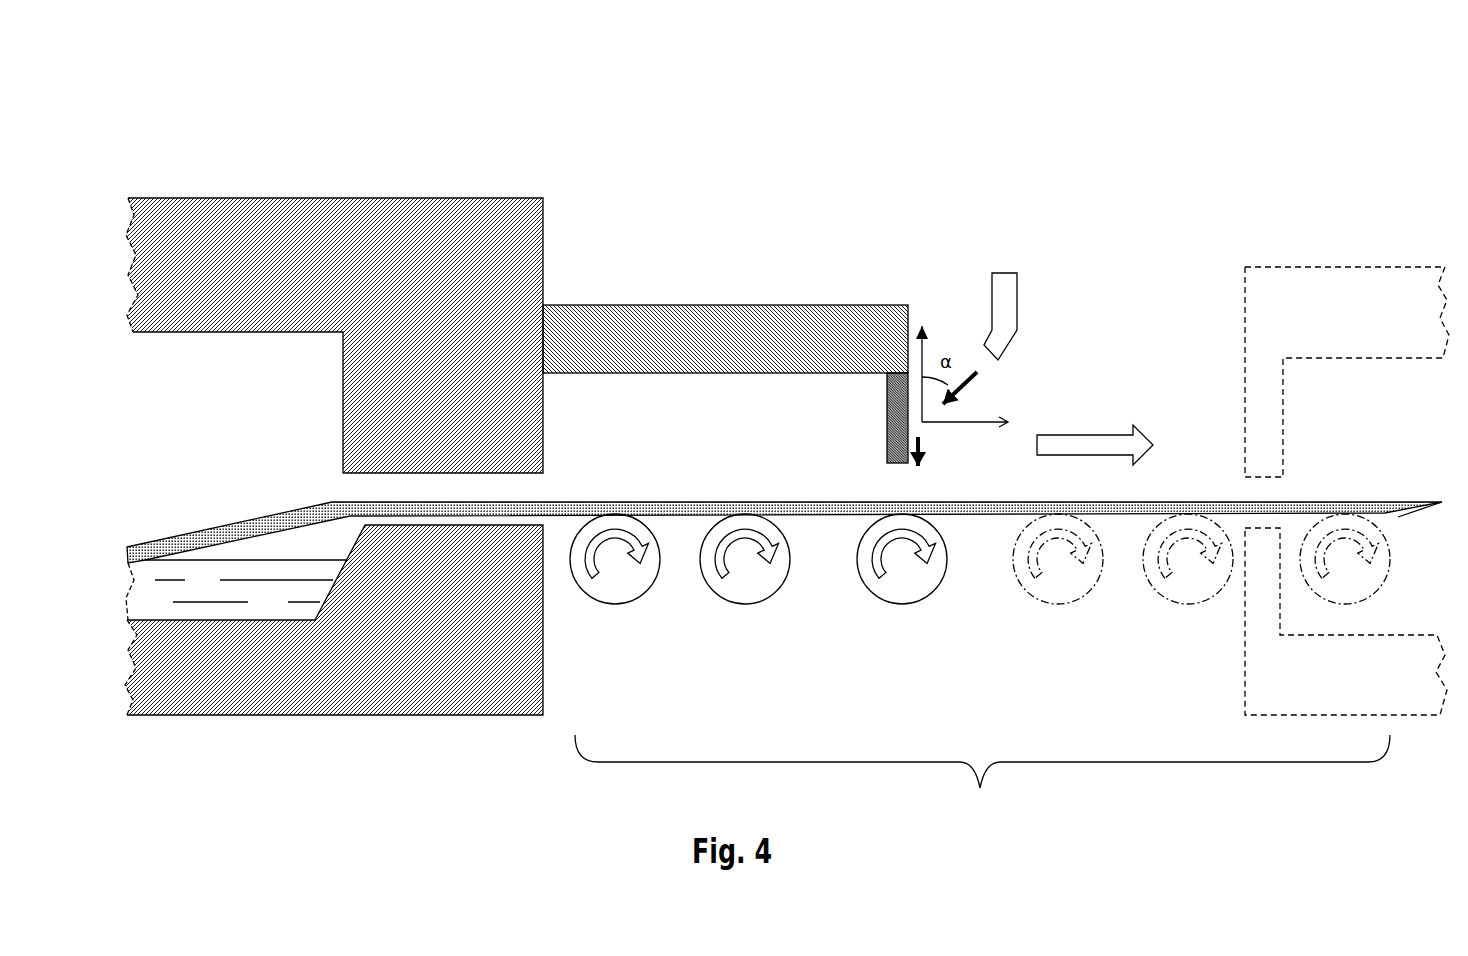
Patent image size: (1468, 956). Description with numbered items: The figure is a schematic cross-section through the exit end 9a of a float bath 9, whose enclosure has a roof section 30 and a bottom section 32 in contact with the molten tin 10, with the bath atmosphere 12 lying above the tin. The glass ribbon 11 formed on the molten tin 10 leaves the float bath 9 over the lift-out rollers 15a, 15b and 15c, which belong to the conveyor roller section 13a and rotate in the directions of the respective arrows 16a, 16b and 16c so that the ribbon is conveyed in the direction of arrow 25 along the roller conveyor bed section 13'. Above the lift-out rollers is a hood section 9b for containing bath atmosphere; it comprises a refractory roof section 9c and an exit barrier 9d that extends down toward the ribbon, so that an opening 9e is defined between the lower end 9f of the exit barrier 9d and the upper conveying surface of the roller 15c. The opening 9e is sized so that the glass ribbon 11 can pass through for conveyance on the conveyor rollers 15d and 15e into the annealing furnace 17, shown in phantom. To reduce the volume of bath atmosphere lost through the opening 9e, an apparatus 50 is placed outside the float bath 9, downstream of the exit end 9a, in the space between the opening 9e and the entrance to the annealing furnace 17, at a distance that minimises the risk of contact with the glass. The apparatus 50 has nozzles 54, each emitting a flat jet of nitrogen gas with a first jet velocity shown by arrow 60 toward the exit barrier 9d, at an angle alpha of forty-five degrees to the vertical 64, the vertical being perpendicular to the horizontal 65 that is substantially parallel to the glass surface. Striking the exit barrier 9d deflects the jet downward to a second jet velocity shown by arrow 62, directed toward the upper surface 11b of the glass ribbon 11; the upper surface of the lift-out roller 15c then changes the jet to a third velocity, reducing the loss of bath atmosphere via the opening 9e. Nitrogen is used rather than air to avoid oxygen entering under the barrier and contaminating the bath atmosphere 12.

The float bath 9 is at (249, 144).
The exit end 9a is at (743, 124).
The hood section 9b is at (790, 295).
The refractory roof section 9c is at (660, 333).
The exit barrier 9d is at (887, 440).
The opening 9e is at (922, 485).
The lower end of the exit barrier 9f is at (898, 472).
The molten tin 10 is at (147, 608).
The glass ribbon 11 is at (753, 498).
The upper surface of the ribbon of glass 11b is at (640, 494).
The bath atmosphere 12 is at (160, 432).
The roller conveyor bed section 13' is at (982, 779).
The conveyor roller section 13a is at (848, 660).
The lift-out roller 15a is at (640, 578).
The lift-out roller 15b is at (770, 577).
The lift-out roller 15c is at (918, 585).
The conveyor roller 15d is at (1075, 587).
The conveyor roller 15e is at (1203, 585).
The arrow 16a is at (589, 571).
The arrow 16b is at (716, 552).
The arrow 16c is at (874, 567).
The annealing furnace 17 is at (1355, 218).
The arrow 25 is at (1125, 443).
The roof section 30 is at (388, 215).
The bottom section 32 is at (392, 680).
The apparatus 50 is at (1051, 237).
The nozzle 54 is at (1013, 305).
The arrow 60 is at (970, 375).
The arrow 62 is at (930, 447).
The vertical 64 is at (928, 330).
The horizontal 65 is at (1010, 421).